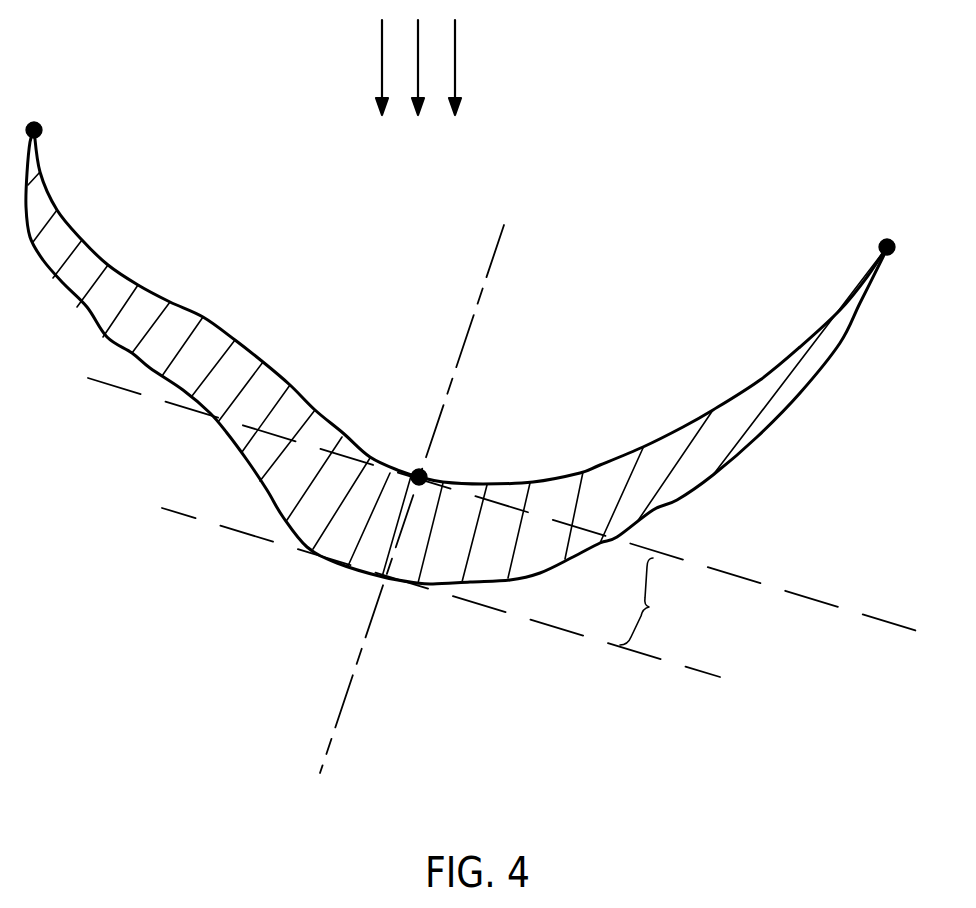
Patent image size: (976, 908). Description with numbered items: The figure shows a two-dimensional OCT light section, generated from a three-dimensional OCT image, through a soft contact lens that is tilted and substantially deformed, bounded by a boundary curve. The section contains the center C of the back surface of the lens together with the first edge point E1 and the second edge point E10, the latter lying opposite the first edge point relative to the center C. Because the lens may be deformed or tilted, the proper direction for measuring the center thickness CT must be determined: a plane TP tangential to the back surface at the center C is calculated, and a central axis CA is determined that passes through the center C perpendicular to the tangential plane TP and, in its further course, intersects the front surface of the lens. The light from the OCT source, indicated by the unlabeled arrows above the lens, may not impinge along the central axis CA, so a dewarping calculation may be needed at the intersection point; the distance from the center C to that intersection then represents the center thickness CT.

The second edge point E10 is at (38, 122).
The first edge point E1 is at (881, 240).
The center of the back surface C is at (427, 471).
The central axis CA is at (495, 254).
The tangential plane TP is at (747, 572).
The center thickness CT is at (653, 601).